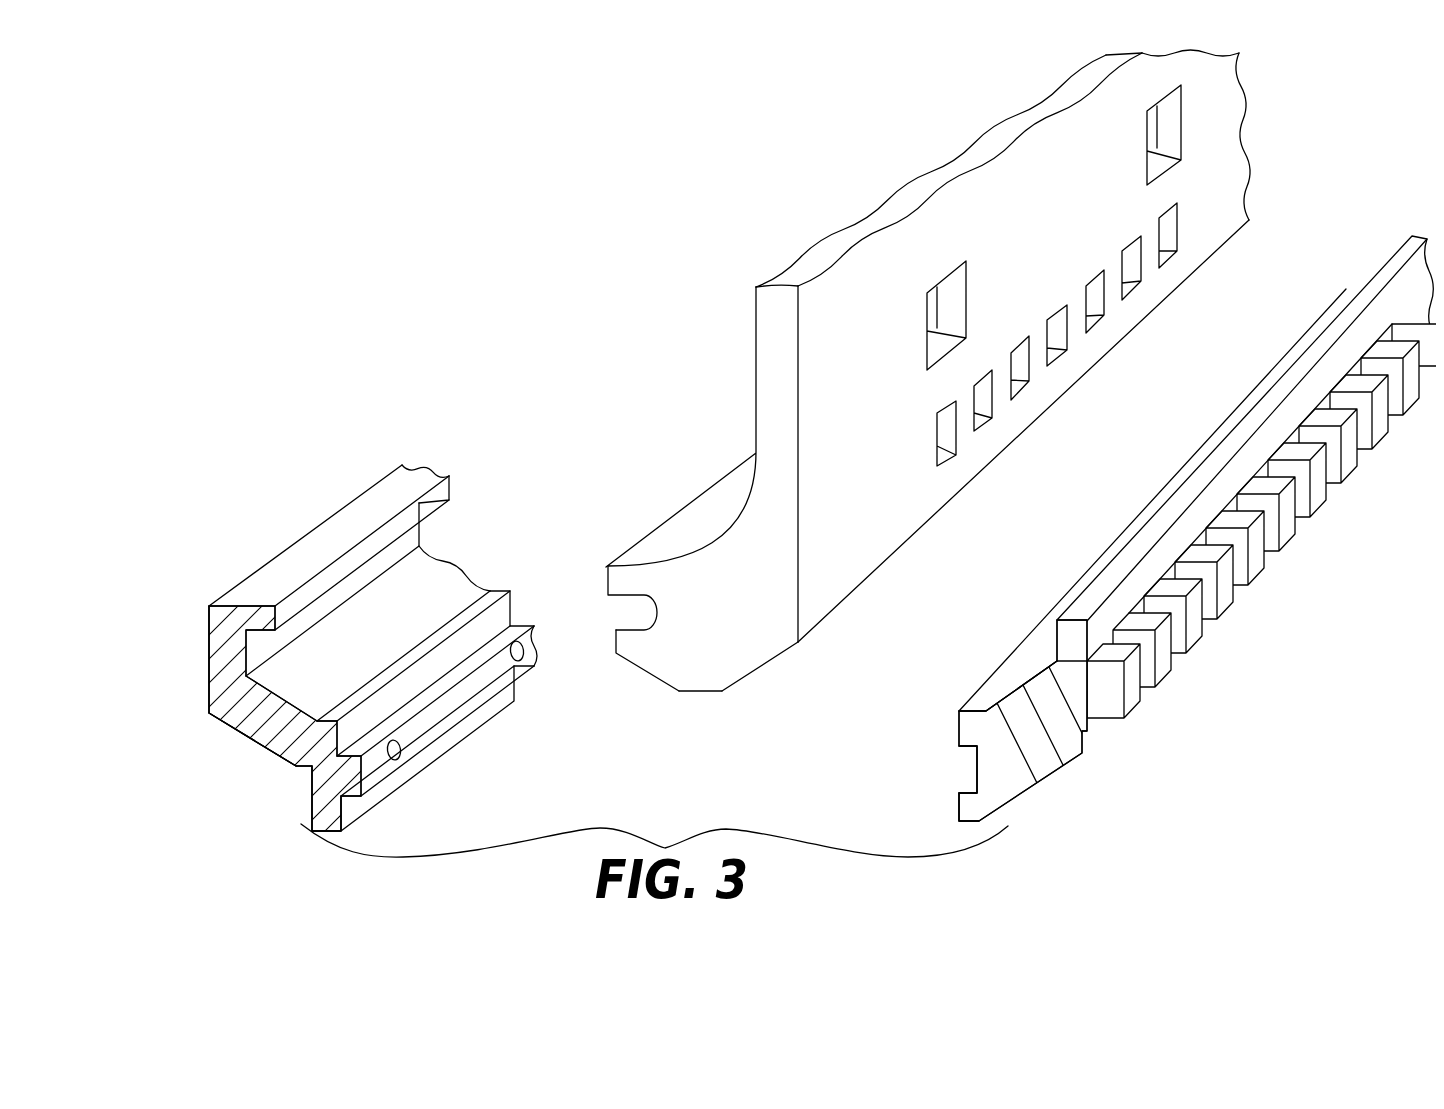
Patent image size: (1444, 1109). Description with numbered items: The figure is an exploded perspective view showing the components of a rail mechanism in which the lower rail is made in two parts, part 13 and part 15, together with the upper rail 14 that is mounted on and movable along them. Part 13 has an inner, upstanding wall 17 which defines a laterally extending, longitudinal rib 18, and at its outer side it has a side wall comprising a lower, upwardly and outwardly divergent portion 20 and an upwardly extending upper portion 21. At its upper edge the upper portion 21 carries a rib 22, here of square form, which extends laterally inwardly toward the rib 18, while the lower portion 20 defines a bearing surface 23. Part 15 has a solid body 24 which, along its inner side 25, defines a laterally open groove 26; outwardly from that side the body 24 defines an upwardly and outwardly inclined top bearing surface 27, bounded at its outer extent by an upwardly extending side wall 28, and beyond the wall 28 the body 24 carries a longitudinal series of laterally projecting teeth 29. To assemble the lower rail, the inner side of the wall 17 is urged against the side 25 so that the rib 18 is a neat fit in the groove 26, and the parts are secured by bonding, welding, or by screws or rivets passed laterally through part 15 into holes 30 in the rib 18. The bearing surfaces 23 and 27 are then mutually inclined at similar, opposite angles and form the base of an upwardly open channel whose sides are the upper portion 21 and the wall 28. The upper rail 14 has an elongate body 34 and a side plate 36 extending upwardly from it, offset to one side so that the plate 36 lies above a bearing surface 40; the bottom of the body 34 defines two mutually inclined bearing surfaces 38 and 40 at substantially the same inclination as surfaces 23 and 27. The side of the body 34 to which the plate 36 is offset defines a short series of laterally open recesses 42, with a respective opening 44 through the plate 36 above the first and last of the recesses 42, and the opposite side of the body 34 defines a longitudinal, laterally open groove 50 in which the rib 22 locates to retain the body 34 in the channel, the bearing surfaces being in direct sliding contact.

The part of lower rail 13 is at (343, 500).
The upper rail 14 is at (1140, 320).
The part of lower rail 15 is at (1078, 560).
The inner upstanding wall 17 is at (322, 813).
The longitudinal rib 18 is at (378, 767).
The lower divergent portion of side wall 20 is at (248, 723).
The upper portion of side wall 21 is at (217, 670).
The rib 22 is at (248, 613).
The bearing surface 23 is at (432, 577).
The solid body 24 is at (1065, 752).
The inner side 25 is at (962, 795).
The groove 26 is at (975, 762).
The top bearing surface 27 is at (1018, 675).
The side wall 28 is at (1063, 632).
The teeth 29 is at (1195, 647).
The holes 30 is at (402, 746).
The elongate body 34 is at (696, 672).
The side plate 36 is at (771, 366).
The bearing surface 38 is at (643, 665).
The bearing surface 40 is at (755, 670).
The recesses 42 is at (1025, 370).
The openings 44 is at (957, 297).
The groove 50 is at (630, 611).